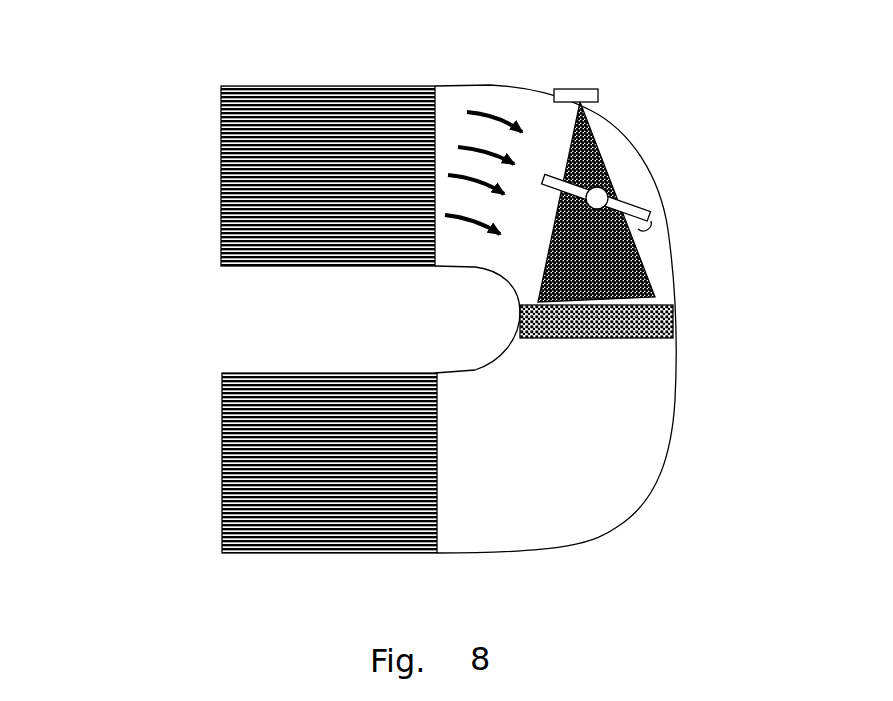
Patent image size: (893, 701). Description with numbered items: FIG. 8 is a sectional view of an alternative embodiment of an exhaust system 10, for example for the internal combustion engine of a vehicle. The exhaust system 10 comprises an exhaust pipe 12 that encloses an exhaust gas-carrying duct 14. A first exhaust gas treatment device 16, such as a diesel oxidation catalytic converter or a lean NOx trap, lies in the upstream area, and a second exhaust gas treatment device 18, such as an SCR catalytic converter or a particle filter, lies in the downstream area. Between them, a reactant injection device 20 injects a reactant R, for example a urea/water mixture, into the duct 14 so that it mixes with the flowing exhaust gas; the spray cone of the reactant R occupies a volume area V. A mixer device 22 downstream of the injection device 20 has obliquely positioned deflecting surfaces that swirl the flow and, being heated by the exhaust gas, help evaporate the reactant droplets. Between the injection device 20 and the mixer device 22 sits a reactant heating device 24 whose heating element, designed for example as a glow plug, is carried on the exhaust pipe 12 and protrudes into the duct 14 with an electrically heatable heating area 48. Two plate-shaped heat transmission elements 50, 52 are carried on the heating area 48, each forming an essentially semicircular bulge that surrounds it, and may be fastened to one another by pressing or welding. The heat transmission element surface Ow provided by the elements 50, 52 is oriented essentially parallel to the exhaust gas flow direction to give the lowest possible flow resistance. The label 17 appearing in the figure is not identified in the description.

The exhaust system 10 is at (102, 36).
The exhaust pipe 12 is at (672, 418).
The exhaust gas-carrying duct 14 is at (615, 482).
The first exhaust gas treatment device 16 is at (308, 100).
The second exhaust gas treatment device 18 is at (294, 535).
The reactant injection device 20 is at (580, 90).
The mixer device 22 is at (647, 337).
The reactant heating device 24 is at (630, 164).
The heating area 48 is at (553, 227).
The heat transmission element 50 is at (635, 203).
The heat transmission element 52 is at (650, 236).
The air flow arrows 17 is at (471, 145).
The heat transmission element surface Ow is at (560, 170).
The reactant R is at (597, 140).
The volume area V is at (662, 273).